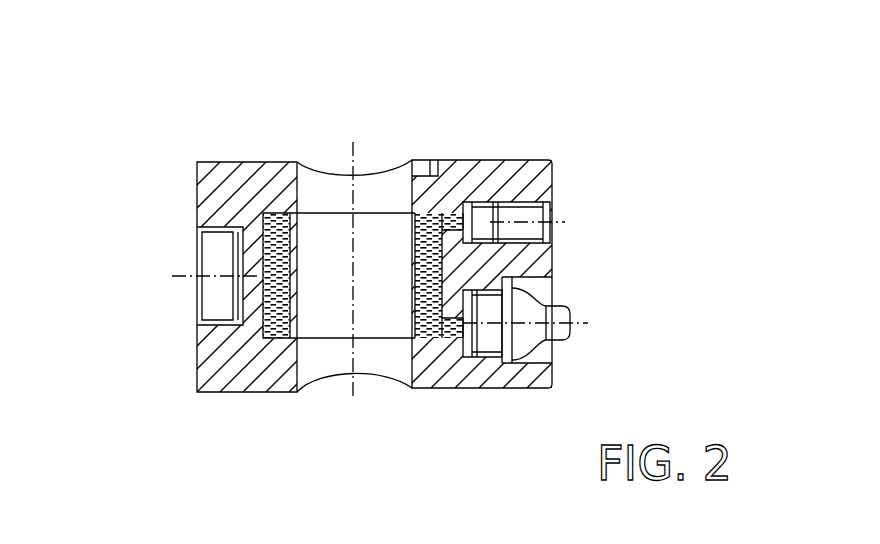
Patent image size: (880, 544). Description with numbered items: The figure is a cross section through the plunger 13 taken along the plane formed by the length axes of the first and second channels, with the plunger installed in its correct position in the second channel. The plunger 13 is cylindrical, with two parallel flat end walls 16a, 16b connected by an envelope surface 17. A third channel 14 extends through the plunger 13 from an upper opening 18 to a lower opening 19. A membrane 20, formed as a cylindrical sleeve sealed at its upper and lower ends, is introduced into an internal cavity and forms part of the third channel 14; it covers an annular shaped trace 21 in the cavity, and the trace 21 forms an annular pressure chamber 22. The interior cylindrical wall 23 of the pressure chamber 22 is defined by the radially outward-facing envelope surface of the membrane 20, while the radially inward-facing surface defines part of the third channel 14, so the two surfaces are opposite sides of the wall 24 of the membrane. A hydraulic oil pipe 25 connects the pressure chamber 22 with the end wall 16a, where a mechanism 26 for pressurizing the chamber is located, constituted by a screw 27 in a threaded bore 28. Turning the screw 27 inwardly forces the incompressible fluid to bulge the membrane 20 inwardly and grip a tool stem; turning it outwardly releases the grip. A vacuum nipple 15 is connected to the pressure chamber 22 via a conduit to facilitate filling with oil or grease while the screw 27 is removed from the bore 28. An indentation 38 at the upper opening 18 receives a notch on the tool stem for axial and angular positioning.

The plunger 13 is at (343, 263).
The third channel 14 is at (323, 388).
The vacuum nipple 15 is at (557, 333).
The end wall 16a is at (553, 172).
The end wall 16b is at (197, 180).
The envelope surface 17 is at (477, 160).
The upper opening 18 is at (383, 170).
The lower opening 19 is at (385, 378).
The membrane 20 is at (262, 318).
The annular shaped trace 21 is at (257, 260).
The pressure chamber 22 is at (262, 230).
The interior cylindrical wall 23 is at (265, 213).
The wall of the membrane 24 is at (291, 262).
The hydraulic oil pipe 25 is at (480, 210).
The mechanism for pressurizing the pressure chamber 26 is at (565, 237).
The screw 27 is at (553, 210).
The threaded bore 28 is at (553, 193).
The indentation 38 is at (422, 168).